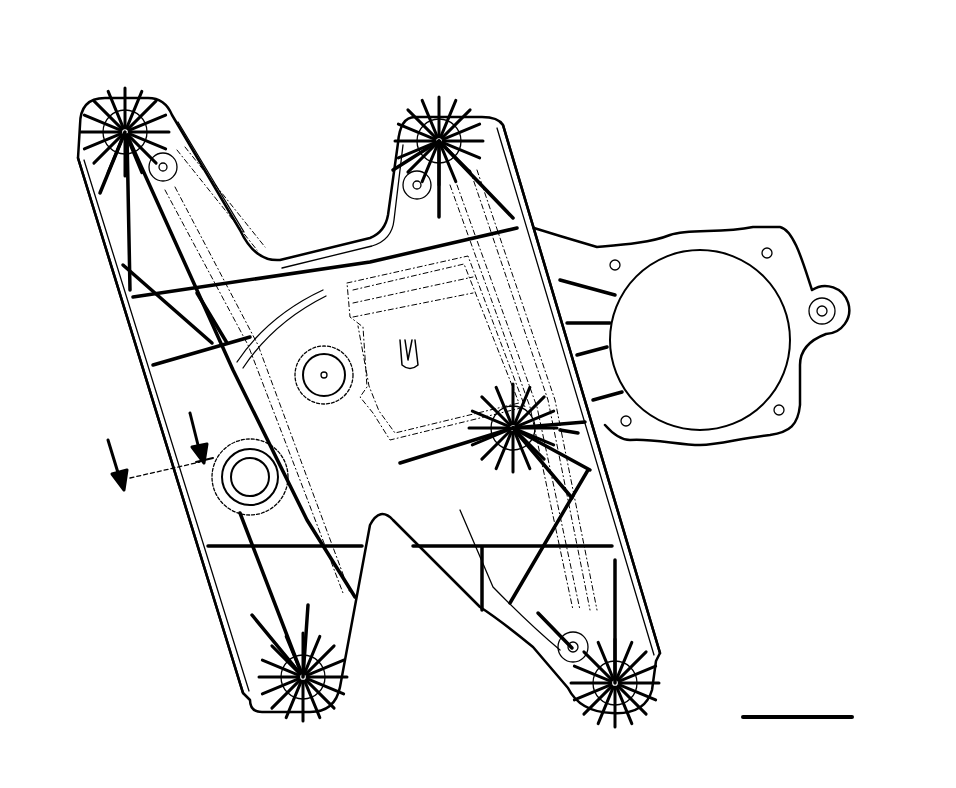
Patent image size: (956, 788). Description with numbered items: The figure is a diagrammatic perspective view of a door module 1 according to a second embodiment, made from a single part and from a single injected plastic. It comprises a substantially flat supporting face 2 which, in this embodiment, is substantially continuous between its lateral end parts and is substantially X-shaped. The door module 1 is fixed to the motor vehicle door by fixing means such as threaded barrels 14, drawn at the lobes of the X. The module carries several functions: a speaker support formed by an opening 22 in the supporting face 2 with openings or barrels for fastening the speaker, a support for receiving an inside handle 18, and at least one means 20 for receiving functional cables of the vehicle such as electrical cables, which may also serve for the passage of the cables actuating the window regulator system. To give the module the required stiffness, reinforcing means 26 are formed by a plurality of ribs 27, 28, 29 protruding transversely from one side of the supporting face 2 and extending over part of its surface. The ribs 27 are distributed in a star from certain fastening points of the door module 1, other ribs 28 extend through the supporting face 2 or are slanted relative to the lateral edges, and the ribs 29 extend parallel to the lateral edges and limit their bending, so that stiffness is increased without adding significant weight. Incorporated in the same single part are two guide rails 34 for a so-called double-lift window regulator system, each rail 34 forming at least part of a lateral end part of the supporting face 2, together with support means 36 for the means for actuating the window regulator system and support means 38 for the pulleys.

The door module 1 is at (345, 215).
The supporting face 2 is at (540, 270).
The threaded barrels 14 is at (123, 128).
The inside handle 18 is at (587, 482).
The means for receiving functional cables 20 is at (418, 350).
The opening 22 is at (755, 380).
The reinforcing means 26 is at (82, 522).
The ribs 27 is at (277, 607).
The ribs 28 is at (220, 545).
The ribs 29 is at (253, 560).
The guide rail 34 is at (513, 150).
The support means 36 is at (322, 372).
The support means for the pulleys 38 is at (303, 705).